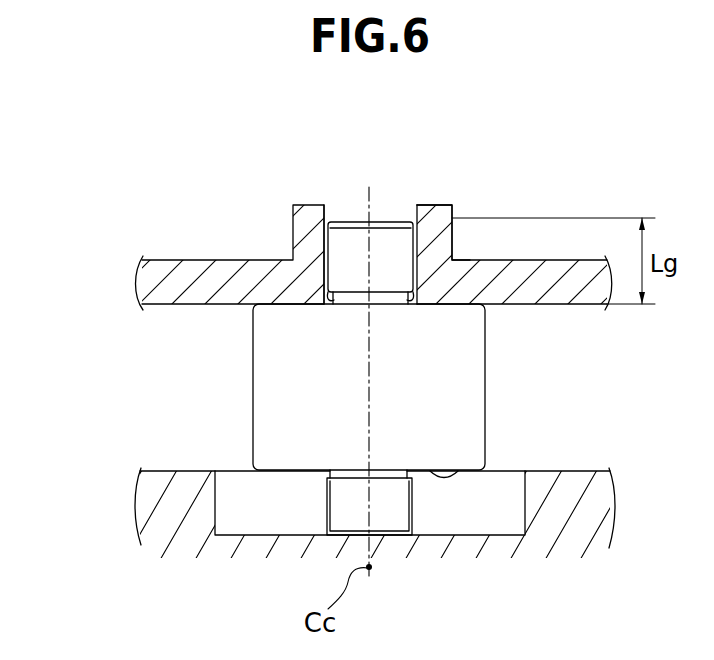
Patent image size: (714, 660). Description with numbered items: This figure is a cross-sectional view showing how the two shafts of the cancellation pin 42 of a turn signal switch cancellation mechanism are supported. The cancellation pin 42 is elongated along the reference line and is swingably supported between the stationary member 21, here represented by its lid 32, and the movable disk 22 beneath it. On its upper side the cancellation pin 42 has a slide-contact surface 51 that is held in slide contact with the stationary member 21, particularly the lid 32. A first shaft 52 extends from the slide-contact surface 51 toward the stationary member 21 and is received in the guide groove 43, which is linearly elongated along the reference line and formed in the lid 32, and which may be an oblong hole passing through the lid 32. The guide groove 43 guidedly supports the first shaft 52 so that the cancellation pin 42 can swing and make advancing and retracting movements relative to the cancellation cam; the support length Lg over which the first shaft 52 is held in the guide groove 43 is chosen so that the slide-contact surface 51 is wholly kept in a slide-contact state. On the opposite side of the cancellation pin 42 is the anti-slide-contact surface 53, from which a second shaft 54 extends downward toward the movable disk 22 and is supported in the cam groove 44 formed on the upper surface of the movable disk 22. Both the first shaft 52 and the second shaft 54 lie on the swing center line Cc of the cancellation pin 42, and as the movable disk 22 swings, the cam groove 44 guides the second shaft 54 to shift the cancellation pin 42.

The lid 32 is at (151, 278).
The stationary member 21 is at (368, 266).
The guide groove 43 is at (330, 211).
The slide-contact surface 51 is at (448, 303).
The first shaft 52 is at (388, 250).
The cancellation pin 42 is at (490, 385).
The anti-slide-contact surface 53 is at (459, 470).
The movable disk 22 is at (160, 513).
The cam groove 44 is at (484, 506).
The second shaft 54 is at (387, 517).